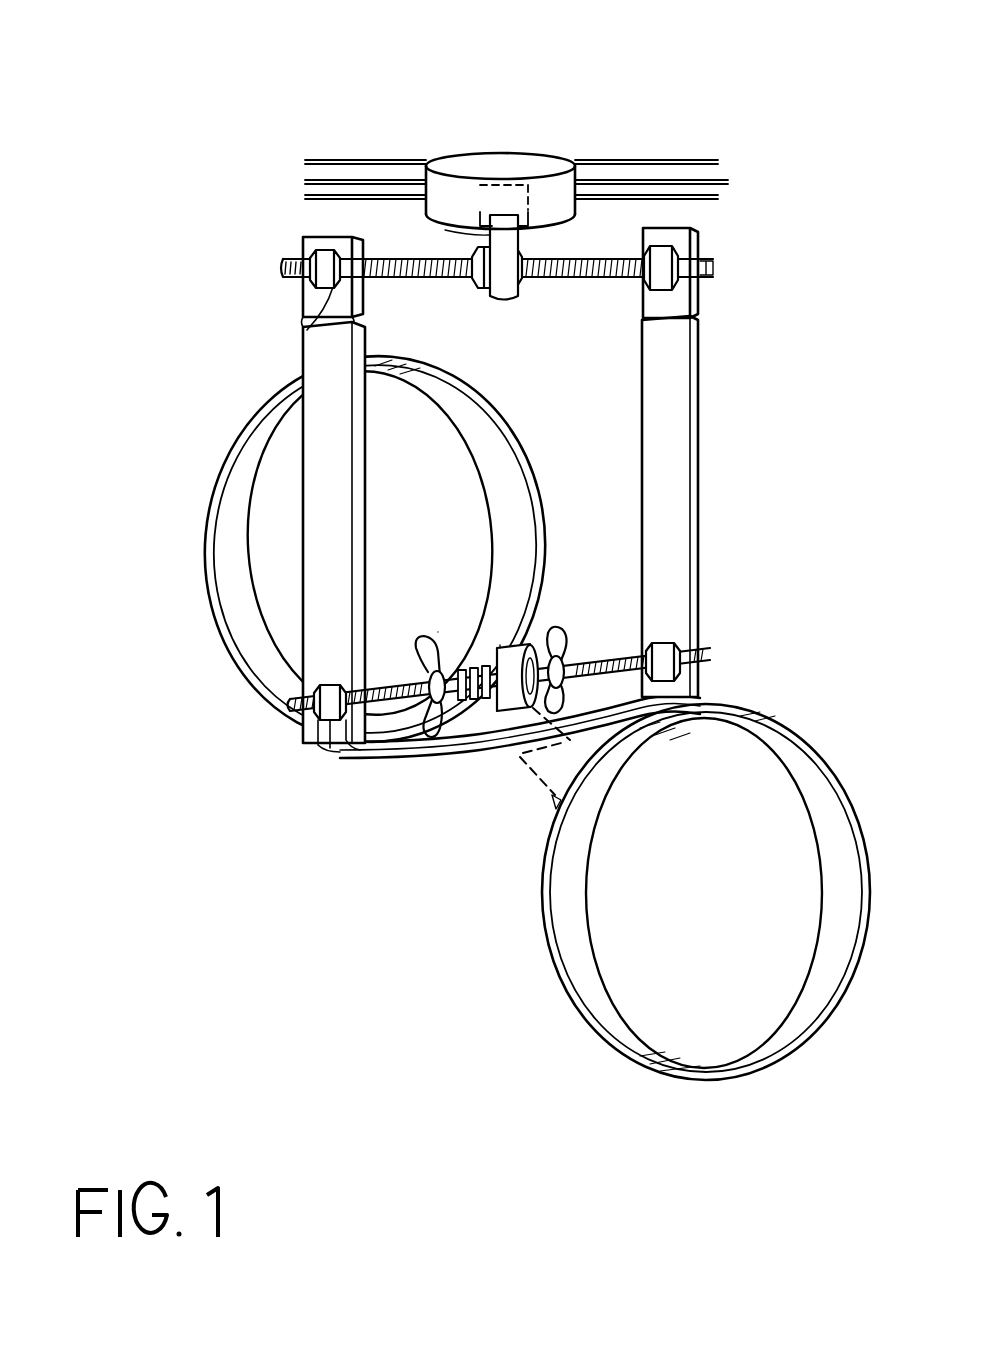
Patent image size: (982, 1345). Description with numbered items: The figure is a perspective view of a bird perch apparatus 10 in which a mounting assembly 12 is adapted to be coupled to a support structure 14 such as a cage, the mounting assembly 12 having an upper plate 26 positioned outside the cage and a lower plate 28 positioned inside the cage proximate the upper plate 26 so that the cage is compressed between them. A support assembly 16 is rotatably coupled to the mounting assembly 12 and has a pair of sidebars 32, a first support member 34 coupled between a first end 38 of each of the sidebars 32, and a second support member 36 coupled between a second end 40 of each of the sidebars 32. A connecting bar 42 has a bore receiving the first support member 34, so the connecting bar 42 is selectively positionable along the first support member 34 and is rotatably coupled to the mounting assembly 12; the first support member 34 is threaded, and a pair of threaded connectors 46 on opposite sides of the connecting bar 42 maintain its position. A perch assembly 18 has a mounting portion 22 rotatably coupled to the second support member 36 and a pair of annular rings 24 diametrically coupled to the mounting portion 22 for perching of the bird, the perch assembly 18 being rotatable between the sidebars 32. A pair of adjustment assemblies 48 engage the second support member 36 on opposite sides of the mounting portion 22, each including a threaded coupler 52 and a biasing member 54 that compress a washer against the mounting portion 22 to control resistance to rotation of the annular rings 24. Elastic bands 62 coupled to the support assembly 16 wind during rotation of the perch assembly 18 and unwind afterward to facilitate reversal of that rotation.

The bird perch apparatus 10 is at (217, 90).
The mounting assembly 12 is at (456, 125).
The support structure 14 is at (683, 178).
The support assembly 16 is at (750, 405).
The perch assembly 18 is at (470, 922).
The mounting portion 22 is at (530, 642).
The annular rings 24 is at (205, 497).
The upper plate 26 is at (525, 153).
The lower plate 28 is at (445, 230).
The sidebars 32 is at (305, 345).
The first support member 34 is at (548, 278).
The second support member 36 is at (412, 665).
The first end 38 is at (303, 240).
The second end 40 is at (700, 697).
The connecting bar 42 is at (522, 222).
The threaded connectors 46 is at (305, 320).
The adjustment assemblies 48 is at (444, 618).
The threaded coupler 52 is at (555, 642).
The biasing member 54 is at (472, 702).
The elastic bands 62 is at (382, 760).